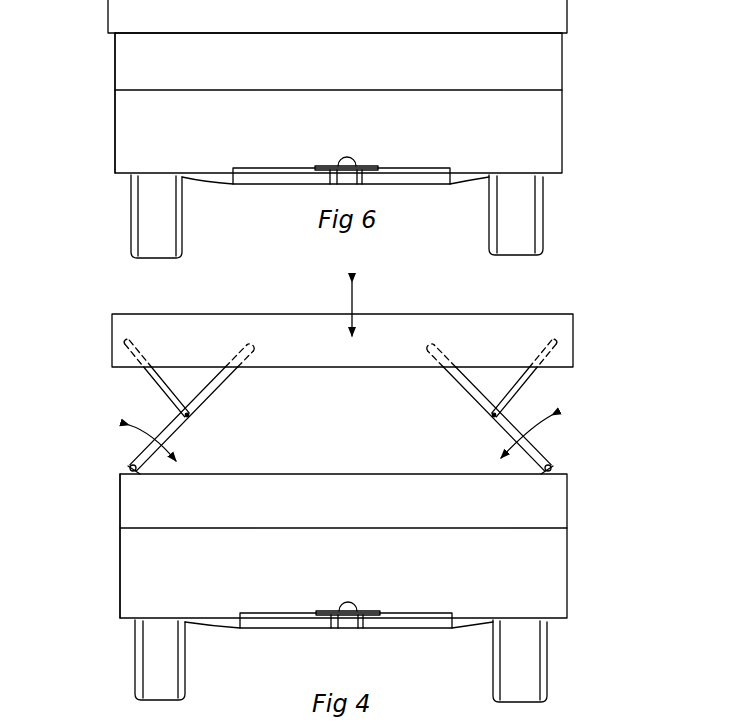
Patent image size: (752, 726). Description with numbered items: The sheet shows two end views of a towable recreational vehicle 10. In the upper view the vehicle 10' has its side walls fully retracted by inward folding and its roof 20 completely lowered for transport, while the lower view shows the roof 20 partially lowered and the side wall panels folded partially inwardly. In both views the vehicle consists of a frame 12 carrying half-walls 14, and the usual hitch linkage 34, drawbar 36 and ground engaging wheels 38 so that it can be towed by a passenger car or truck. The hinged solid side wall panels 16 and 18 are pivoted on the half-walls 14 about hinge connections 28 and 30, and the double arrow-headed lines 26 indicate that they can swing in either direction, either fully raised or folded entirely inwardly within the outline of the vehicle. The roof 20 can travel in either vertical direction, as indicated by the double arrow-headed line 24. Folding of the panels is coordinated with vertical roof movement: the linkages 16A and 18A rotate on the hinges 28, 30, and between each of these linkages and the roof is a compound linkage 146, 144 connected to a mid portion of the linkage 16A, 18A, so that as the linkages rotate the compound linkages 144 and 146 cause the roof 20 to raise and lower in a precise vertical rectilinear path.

In FIG. 4, the recreational vehicle 10 is at (387, 546).
In FIG. 6, the recreational vehicle 10' is at (381, 103).
In FIG. 6, the frame 12 is at (115, 174).
In FIG. 4, the frame 12 is at (120, 619).
In FIG. 6, the half-walls 14 is at (243, 131).
In FIG. 4, the half-walls 14 is at (249, 568).
In FIG. 4, the solid side wall panel 16 is at (130, 467).
In FIG. 4, the linkage 16A is at (193, 430).
In FIG. 4, the solid side wall panel 18 is at (556, 462).
In FIG. 4, the linkage 18A is at (478, 401).
In FIG. 4, the roof 20 is at (568, 314).
In FIG. 4, the double arrow-headed line 24 is at (360, 296).
In FIG. 4, the double arrow-headed lines 26 is at (146, 412).
In FIG. 4, the hinge connection 28 is at (133, 477).
In FIG. 4, the hinge connection 30 is at (545, 476).
In FIG. 6, the hitch linkage 34 is at (347, 157).
In FIG. 4, the hitch linkage 34 is at (349, 603).
In FIG. 6, the drawbar 36 is at (460, 139).
In FIG. 4, the drawbar 36 is at (433, 623).
In FIG. 6, the ground engaging wheels 38 is at (130, 252).
In FIG. 4, the ground engaging wheels 38 is at (133, 697).
In FIG. 4, the compound linkage 144 is at (532, 382).
In FIG. 4, the compound linkage 146 is at (150, 382).